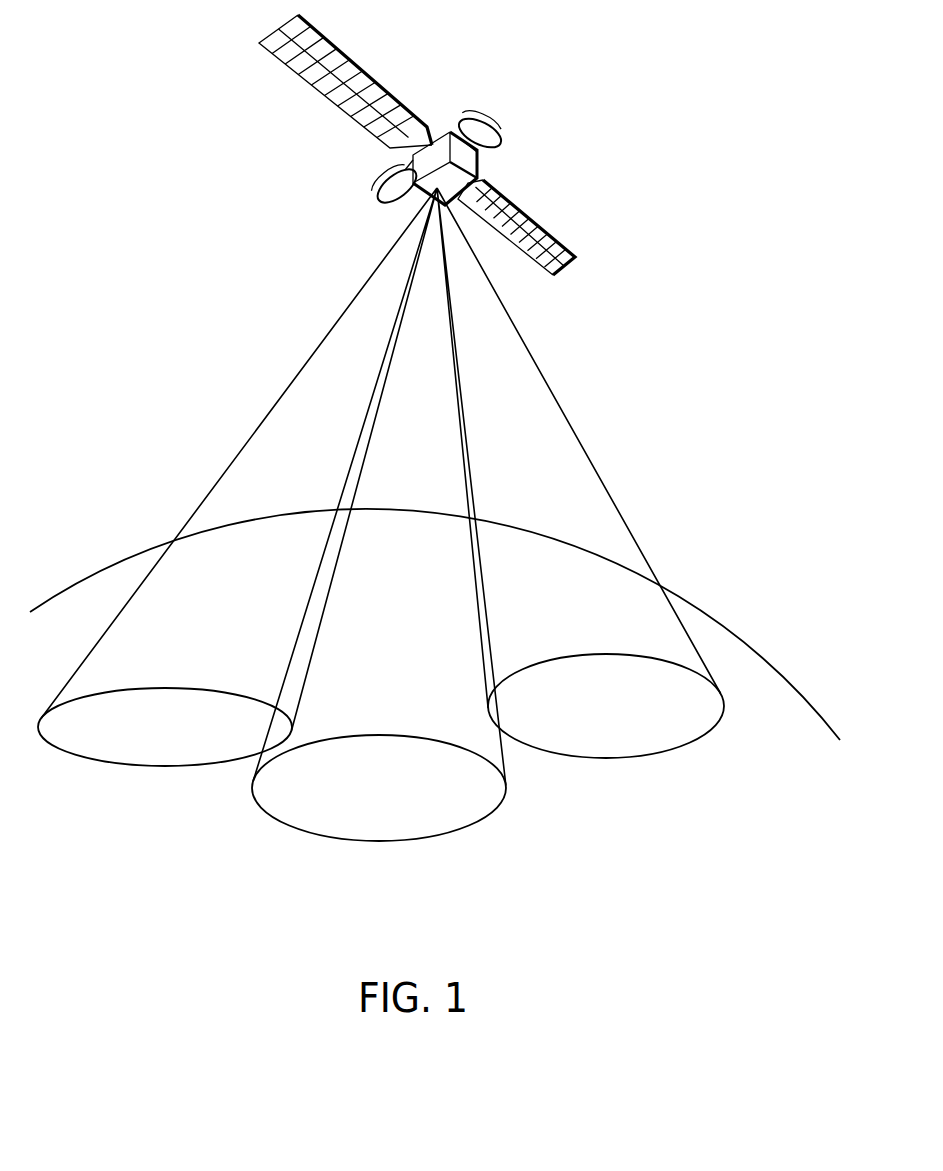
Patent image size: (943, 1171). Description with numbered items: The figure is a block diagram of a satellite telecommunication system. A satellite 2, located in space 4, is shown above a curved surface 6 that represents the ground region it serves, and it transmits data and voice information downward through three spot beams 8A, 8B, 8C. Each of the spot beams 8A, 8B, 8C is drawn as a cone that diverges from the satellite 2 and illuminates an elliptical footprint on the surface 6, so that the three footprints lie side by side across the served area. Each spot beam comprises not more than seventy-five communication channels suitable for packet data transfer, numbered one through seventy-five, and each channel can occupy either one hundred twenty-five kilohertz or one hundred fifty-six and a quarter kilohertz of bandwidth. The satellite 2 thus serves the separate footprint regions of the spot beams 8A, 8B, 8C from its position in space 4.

The satellite 2 is at (478, 165).
The space 4 is at (132, 291).
The earth surface 6 is at (748, 645).
The spot beam 8A is at (128, 765).
The spot beam 8B is at (399, 843).
The spot beam 8C is at (640, 760).